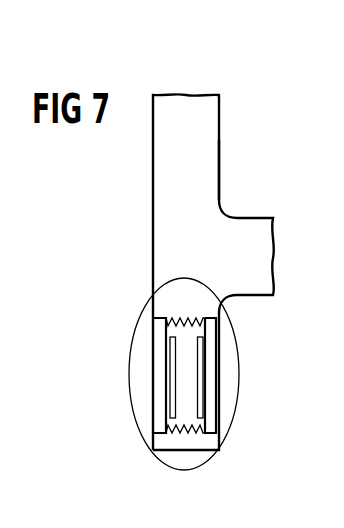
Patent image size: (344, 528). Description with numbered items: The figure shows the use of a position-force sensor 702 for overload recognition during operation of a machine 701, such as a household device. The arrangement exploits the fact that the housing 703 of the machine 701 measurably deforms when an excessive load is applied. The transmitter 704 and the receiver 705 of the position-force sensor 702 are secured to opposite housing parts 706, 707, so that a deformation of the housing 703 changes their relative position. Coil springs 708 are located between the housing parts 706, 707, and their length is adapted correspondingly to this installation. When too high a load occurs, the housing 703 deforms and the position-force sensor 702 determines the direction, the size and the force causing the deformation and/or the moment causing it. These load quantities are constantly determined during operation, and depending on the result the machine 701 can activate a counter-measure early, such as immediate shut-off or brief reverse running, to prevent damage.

The machine 701 is at (205, 143).
The position-force sensor 702 is at (141, 433).
The housing 703 is at (152, 205).
The transmitter 704 is at (170, 393).
The receiver 705 is at (198, 378).
The housing part 706 is at (158, 375).
The housing part 707 is at (216, 340).
The coil springs 708 is at (182, 317).